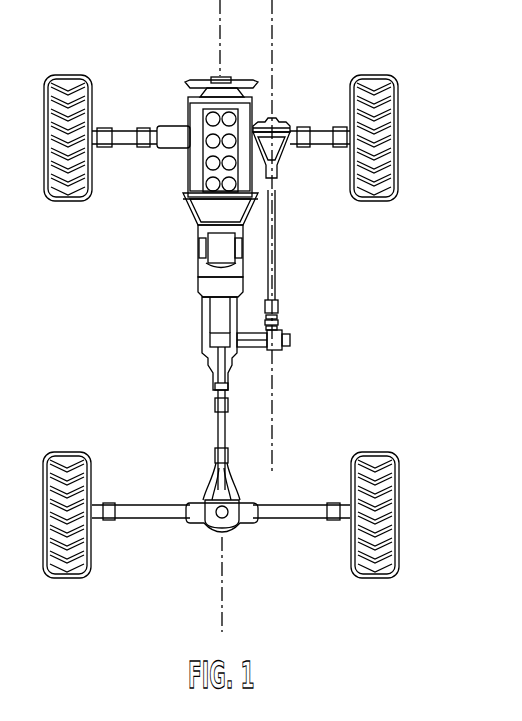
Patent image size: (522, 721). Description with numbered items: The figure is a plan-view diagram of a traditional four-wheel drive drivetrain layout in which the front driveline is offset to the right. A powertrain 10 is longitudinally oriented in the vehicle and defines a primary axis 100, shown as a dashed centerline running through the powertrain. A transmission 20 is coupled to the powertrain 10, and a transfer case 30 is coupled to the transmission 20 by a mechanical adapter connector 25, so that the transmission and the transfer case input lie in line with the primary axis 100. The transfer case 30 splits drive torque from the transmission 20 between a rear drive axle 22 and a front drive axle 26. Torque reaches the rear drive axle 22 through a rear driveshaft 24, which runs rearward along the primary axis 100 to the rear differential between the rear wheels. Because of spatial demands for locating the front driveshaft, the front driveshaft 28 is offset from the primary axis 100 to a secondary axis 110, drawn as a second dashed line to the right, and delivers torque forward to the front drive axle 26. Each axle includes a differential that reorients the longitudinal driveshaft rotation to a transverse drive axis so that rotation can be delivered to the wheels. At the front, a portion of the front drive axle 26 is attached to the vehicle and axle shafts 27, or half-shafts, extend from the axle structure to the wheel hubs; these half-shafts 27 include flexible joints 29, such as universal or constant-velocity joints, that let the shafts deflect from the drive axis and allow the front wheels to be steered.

The primary axis 100 is at (220, 316).
The secondary axis 110 is at (296, 236).
The powertrain 10 is at (200, 147).
The transmission 20 is at (197, 235).
The rear drive axle 22 is at (221, 535).
The rear driveshaft 24 is at (201, 445).
The mechanical adapter connector 25 is at (197, 332).
The front drive axle 26 is at (237, 122).
The axle shafts 27 is at (221, 117).
The front driveshaft 28 is at (292, 260).
The flexible joints 29 is at (224, 127).
The transfer case 30 is at (294, 342).